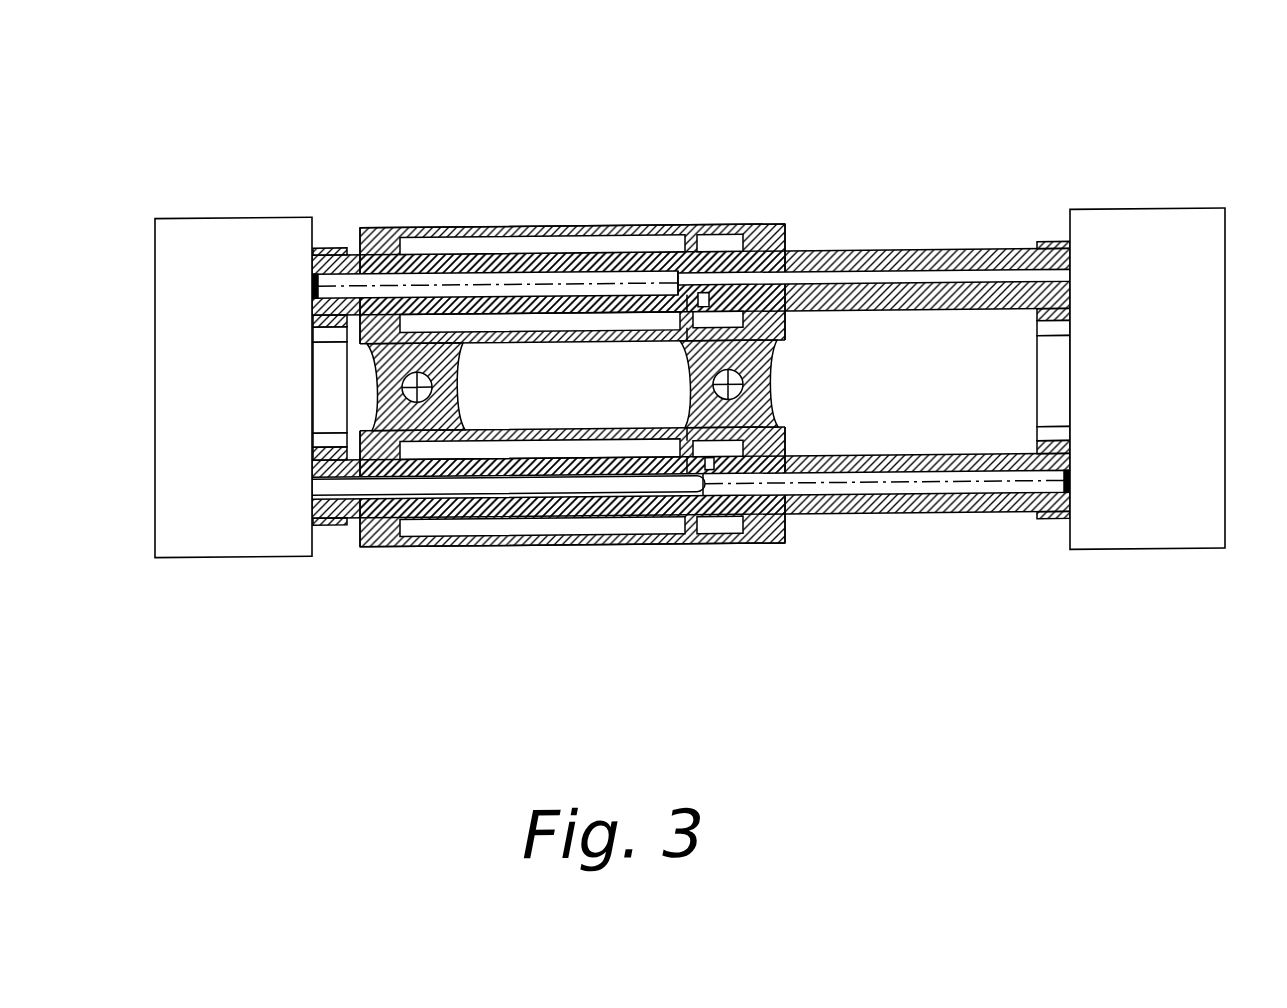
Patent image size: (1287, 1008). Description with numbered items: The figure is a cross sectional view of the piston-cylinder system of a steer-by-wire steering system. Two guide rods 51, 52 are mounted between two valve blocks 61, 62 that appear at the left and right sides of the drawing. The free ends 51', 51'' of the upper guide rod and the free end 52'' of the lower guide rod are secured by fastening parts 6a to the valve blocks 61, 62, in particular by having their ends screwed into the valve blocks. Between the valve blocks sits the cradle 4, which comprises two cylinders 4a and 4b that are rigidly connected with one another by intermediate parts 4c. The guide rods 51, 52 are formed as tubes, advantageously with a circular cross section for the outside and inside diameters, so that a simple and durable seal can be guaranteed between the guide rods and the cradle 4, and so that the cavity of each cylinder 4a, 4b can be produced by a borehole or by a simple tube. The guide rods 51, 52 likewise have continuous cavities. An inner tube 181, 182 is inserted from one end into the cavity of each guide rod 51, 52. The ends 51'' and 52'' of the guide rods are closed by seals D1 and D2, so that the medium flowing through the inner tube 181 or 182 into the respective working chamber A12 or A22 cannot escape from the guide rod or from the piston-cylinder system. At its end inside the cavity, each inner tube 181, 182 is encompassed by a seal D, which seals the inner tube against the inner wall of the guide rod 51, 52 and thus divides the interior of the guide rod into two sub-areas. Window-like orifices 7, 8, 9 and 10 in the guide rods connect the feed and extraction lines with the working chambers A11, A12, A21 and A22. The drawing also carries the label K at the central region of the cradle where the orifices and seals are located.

The cradle 4 is at (560, 234).
The cylinder 4a is at (700, 238).
The cylinder 4b is at (724, 548).
The intermediate parts 4c is at (452, 370).
The guide rod 51 is at (691, 190).
The free end of guide rod 51' is at (1114, 144).
The free end of guide rod 51'' is at (314, 174).
The guide rod 52 is at (691, 566).
The free end of guide rod 52'' is at (704, 596).
The inner tube 181 is at (1002, 283).
The inner tube 182 is at (472, 503).
The valve block 61 is at (1192, 411).
The valve block 62 is at (258, 423).
The fastening parts 6a is at (203, 618).
The window-like orifice 7 is at (678, 306).
The window-like orifice 8 is at (686, 310).
The window-like orifice 9 is at (692, 474).
The window-like orifice 10 is at (716, 470).
The working chamber A11 is at (740, 246).
The working chamber A12 is at (446, 243).
The working chamber A21 is at (518, 540).
The working chamber A22 is at (738, 535).
The seal D is at (683, 284).
The seal D1 is at (313, 280).
The seal D2 is at (1073, 476).
The piston K is at (727, 323).